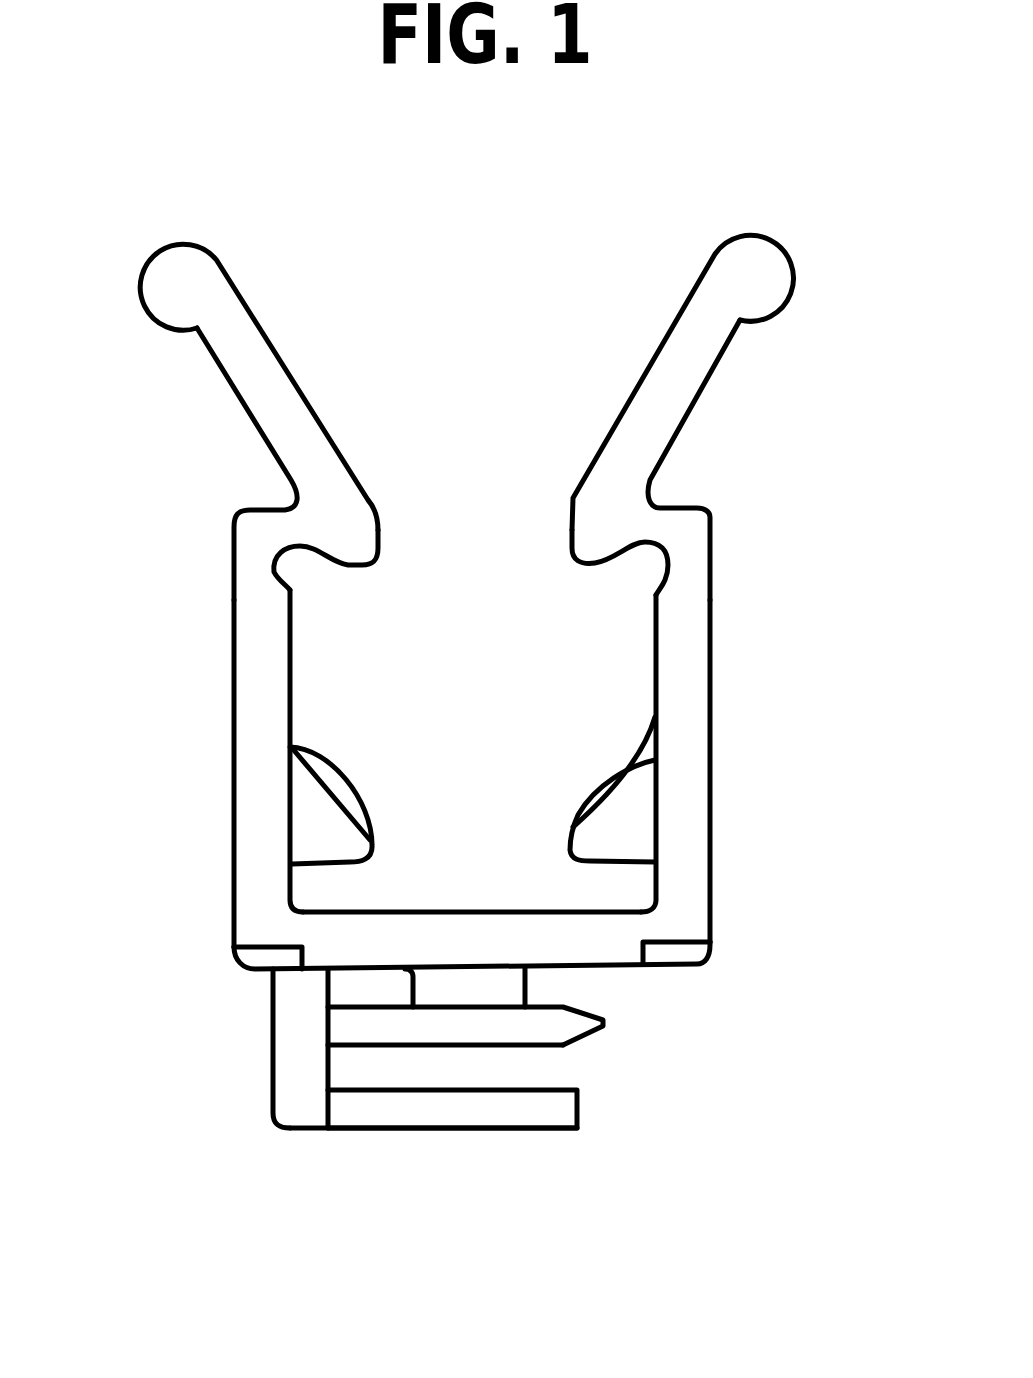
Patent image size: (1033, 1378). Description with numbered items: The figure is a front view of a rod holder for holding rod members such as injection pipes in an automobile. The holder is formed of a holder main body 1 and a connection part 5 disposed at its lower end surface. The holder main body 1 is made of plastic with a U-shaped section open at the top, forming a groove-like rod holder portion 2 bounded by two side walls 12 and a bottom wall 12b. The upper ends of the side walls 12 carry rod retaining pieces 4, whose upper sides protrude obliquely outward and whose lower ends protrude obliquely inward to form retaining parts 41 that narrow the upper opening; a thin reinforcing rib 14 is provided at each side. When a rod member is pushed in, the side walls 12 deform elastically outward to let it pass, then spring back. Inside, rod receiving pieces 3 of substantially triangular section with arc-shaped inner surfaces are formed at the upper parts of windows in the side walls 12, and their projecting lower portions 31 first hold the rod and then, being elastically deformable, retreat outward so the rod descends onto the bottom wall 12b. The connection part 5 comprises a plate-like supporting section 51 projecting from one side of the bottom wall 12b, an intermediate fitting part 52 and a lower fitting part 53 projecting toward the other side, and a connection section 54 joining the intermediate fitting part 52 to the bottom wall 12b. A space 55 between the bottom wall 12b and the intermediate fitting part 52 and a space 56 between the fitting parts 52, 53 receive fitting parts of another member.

The holder main body 1 is at (720, 529).
The rod holder portion 2 is at (593, 688).
The rod receiving piece 3 is at (317, 833).
The projecting lower portion 31 is at (293, 747).
The rod retaining piece 4 is at (268, 335).
The retaining part 41 is at (378, 558).
The connection part 5 is at (365, 1130).
The supporting section 51 is at (295, 1082).
The intermediate fitting part 52 is at (587, 1027).
The lower fitting part 53 is at (552, 1110).
The connection section 54 is at (500, 987).
The space 55 is at (353, 987).
The space 56 is at (488, 1073).
The side wall 12 is at (245, 640).
The bottom wall 12b is at (455, 935).
The thin reinforcing rib 14 is at (253, 458).